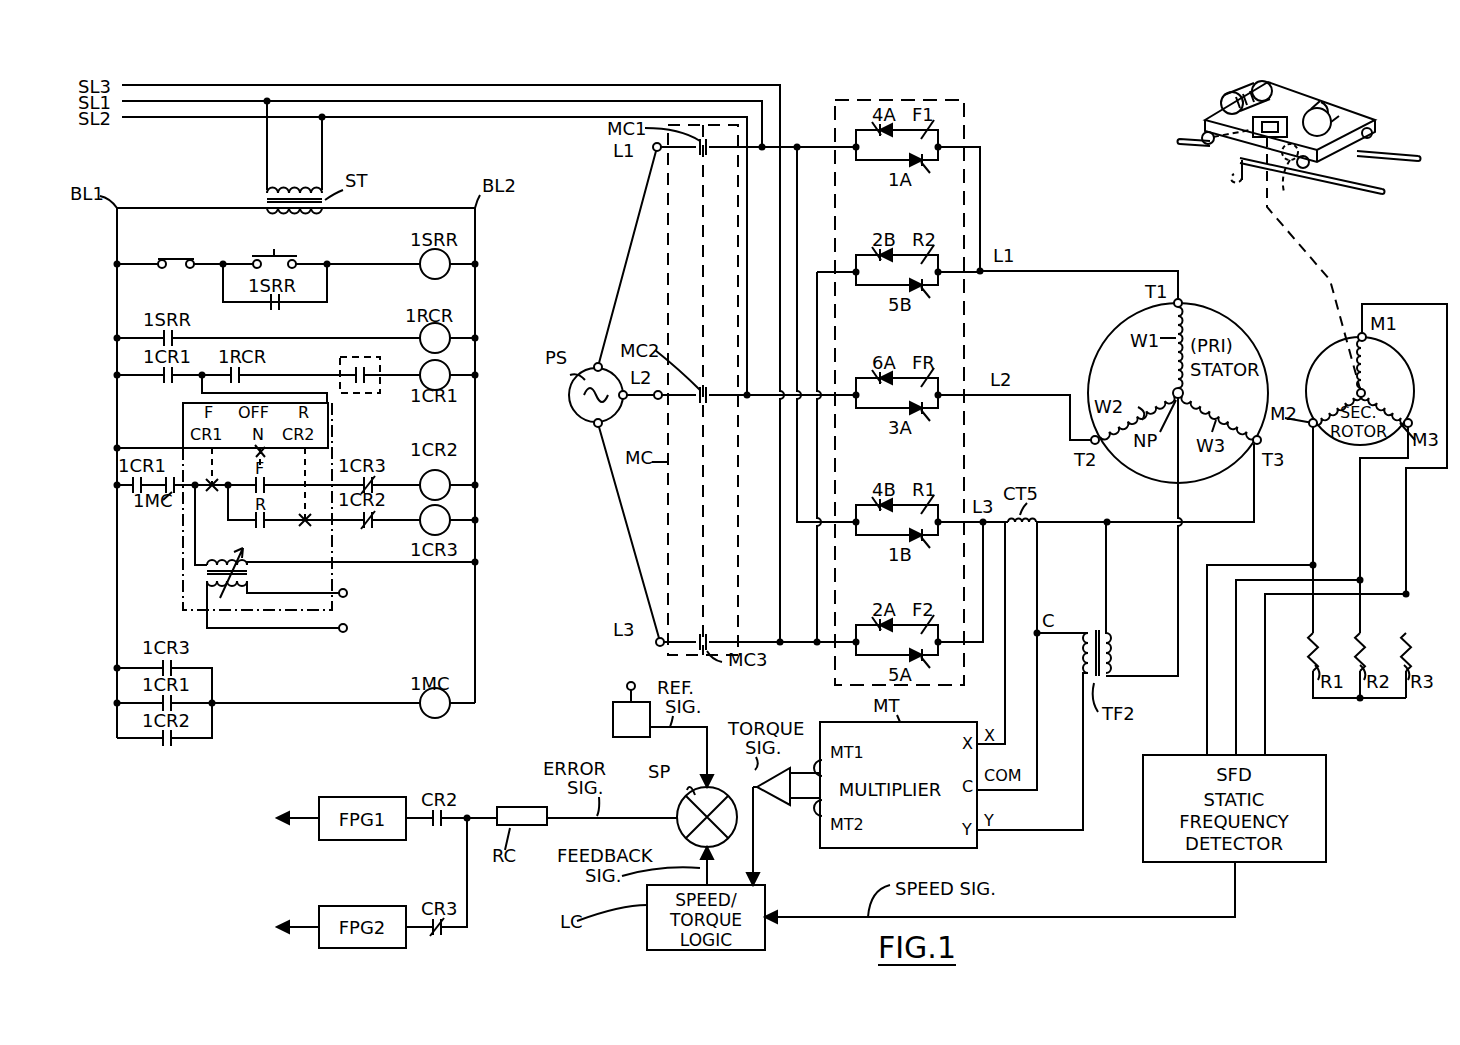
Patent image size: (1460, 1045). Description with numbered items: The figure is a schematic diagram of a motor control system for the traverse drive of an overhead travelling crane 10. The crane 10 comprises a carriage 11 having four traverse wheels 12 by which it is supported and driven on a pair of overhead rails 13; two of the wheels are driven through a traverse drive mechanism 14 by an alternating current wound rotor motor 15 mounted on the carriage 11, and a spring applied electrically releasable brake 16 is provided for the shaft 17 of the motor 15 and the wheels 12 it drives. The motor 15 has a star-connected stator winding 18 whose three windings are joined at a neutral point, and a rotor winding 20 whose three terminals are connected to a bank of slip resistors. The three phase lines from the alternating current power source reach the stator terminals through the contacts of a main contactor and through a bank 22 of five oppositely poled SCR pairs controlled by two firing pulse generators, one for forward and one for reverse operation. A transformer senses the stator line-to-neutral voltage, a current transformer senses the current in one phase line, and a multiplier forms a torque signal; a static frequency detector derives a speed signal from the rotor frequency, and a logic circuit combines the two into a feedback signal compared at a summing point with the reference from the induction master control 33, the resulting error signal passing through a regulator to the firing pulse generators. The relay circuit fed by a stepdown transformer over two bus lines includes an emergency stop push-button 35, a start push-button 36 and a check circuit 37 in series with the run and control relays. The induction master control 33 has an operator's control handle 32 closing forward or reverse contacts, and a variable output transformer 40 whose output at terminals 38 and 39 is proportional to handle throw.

The overhead travelling crane 10 is at (1374, 102).
The carriage 11 is at (1351, 116).
The traverse wheels 12 is at (1373, 134).
The overhead rails 13 is at (1385, 168).
The traverse drive mechanism 14 is at (1280, 116).
The alternating current wound rotor motor 15 is at (1274, 342).
The spring applied electrically releasable brake 16 is at (1272, 187).
The shaft 17 is at (1336, 280).
The motor stator (primary) winding 18 is at (1230, 300).
The rotor (secondary winding) 20 is at (1398, 358).
The bank of SCRs 22 is at (966, 99).
The operator's control handle 32 is at (624, 692).
The induction master control 33 is at (183, 408).
The emergency stop normally closed push-button switch 35 is at (177, 259).
The normally open push-button start switch 36 is at (281, 258).
The check circuit 37 is at (341, 362).
The output terminal 38 is at (358, 594).
The output terminal 39 is at (358, 629).
The variable output transformer 40 is at (200, 577).